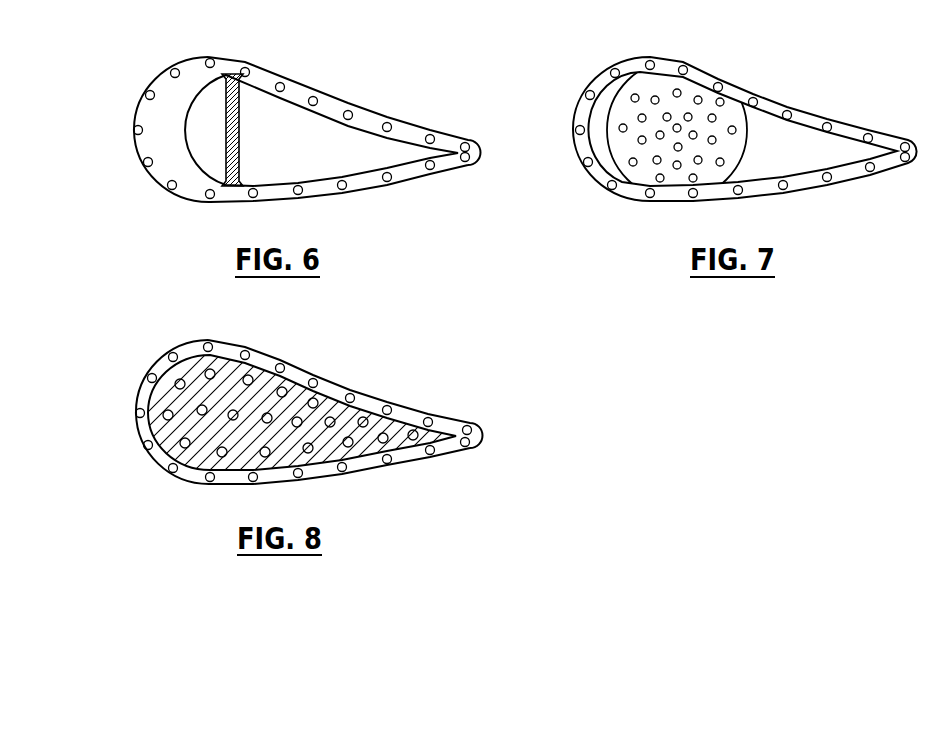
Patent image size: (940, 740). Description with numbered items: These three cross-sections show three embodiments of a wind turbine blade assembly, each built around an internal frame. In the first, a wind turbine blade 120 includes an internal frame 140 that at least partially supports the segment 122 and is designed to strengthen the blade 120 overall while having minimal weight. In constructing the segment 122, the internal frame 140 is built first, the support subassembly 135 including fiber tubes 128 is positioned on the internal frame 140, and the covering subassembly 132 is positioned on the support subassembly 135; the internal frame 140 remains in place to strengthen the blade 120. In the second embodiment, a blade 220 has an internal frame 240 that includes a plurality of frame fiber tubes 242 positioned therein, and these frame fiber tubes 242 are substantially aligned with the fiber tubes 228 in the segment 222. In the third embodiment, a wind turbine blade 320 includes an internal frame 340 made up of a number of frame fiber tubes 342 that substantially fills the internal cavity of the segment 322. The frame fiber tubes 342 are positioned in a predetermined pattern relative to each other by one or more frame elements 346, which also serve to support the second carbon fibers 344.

In FIG. 6, the wind turbine blade 120 is at (316, 73).
In FIG. 6, the segment 122 is at (376, 118).
In FIG. 6, the covering subassembly 132 is at (417, 127).
In FIG. 6, the support subassembly 135 is at (403, 145).
In FIG. 6, the fiber tubes 128 is at (389, 181).
In FIG. 6, the internal frame 140 is at (248, 127).
In FIG. 7, the blade 220 is at (793, 76).
In FIG. 7, the segment 222 is at (853, 118).
In FIG. 7, the internal frame 240 is at (608, 170).
In FIG. 7, the frame fiber tubes 242 is at (736, 131).
In FIG. 7, the fiber tubes 228 is at (870, 171).
In FIG. 8, the wind turbine blade 320 is at (373, 385).
In FIG. 8, the segment 322 is at (450, 425).
In FIG. 8, the internal frame 340 is at (361, 454).
In FIG. 8, the frame fiber tubes 342 is at (165, 413).
In FIG. 8, the second carbon fibers 344 is at (171, 470).
In FIG. 8, the frame elements 346 is at (398, 438).